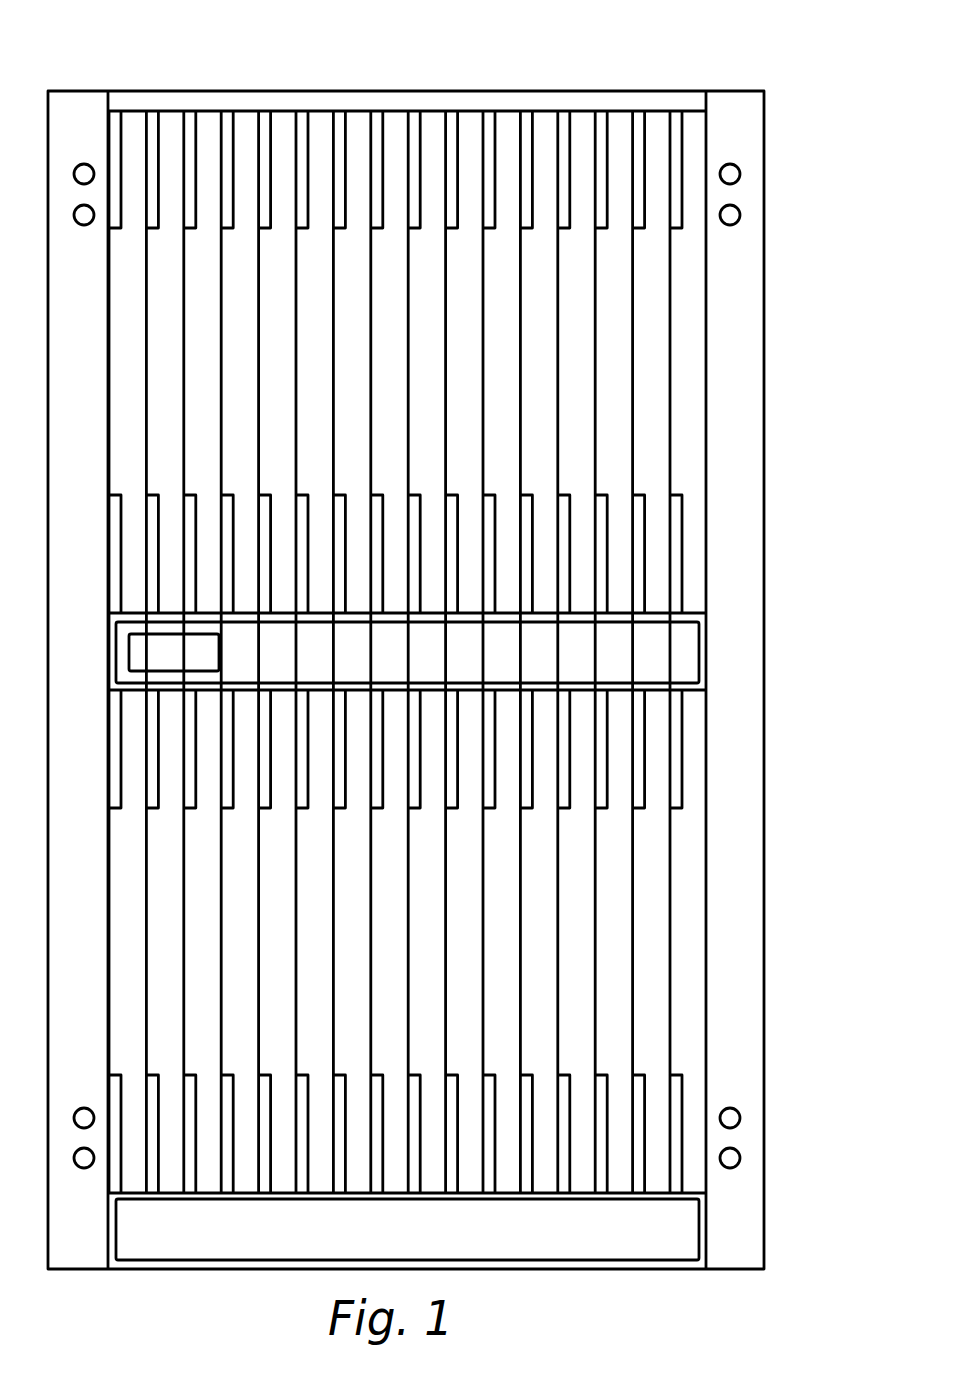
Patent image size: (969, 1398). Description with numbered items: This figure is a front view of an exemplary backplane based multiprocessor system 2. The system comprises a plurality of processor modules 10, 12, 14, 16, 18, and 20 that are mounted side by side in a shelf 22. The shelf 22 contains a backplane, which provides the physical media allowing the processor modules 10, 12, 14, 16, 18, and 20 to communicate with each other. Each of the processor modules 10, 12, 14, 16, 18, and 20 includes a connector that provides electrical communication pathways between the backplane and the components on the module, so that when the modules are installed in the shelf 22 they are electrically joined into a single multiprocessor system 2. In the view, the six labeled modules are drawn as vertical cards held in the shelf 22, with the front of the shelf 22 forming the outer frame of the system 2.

The backplane based multiprocessor system 2 is at (452, 634).
The processor module 10 is at (115, 328).
The processor module 12 is at (227, 328).
The processor module 14 is at (340, 328).
The processor module 16 is at (477, 328).
The processor module 18 is at (564, 328).
The processor module 20 is at (676, 328).
The shelf 22 is at (765, 592).